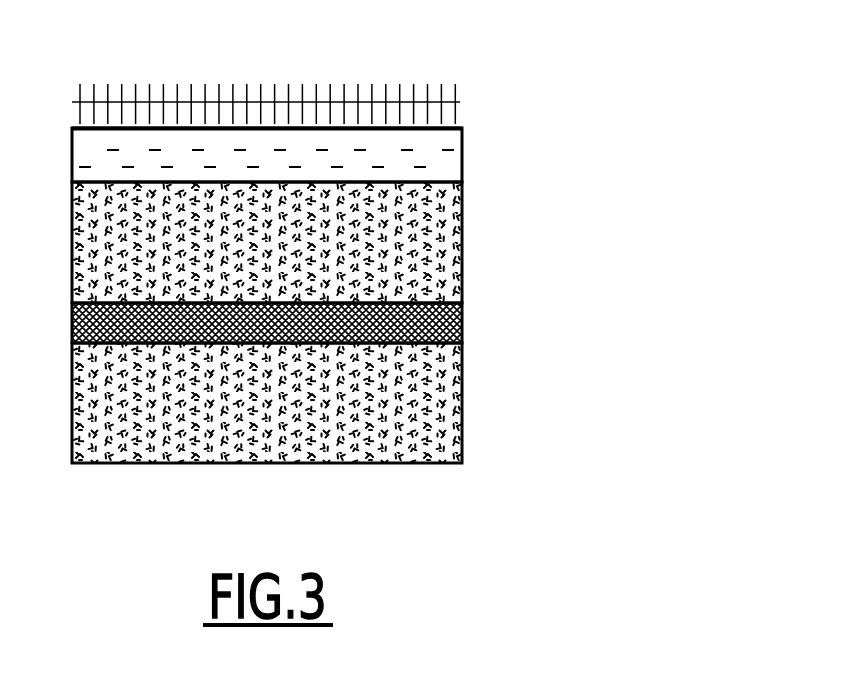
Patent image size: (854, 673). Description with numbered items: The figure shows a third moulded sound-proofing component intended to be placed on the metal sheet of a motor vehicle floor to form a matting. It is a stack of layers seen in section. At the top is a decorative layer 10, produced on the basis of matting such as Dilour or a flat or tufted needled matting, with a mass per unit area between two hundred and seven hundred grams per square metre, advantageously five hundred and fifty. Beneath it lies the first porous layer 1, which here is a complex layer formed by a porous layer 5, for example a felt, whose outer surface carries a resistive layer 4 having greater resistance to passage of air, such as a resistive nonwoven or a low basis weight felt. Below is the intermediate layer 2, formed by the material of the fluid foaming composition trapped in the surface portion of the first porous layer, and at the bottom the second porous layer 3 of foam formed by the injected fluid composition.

The decorative layer 10 is at (362, 236).
The first porous layer 1 is at (362, 215).
The resistive layer 4 is at (463, 157).
The porous layer 5 is at (463, 245).
The intermediate layer 2 is at (463, 325).
The second porous layer 3 is at (463, 405).